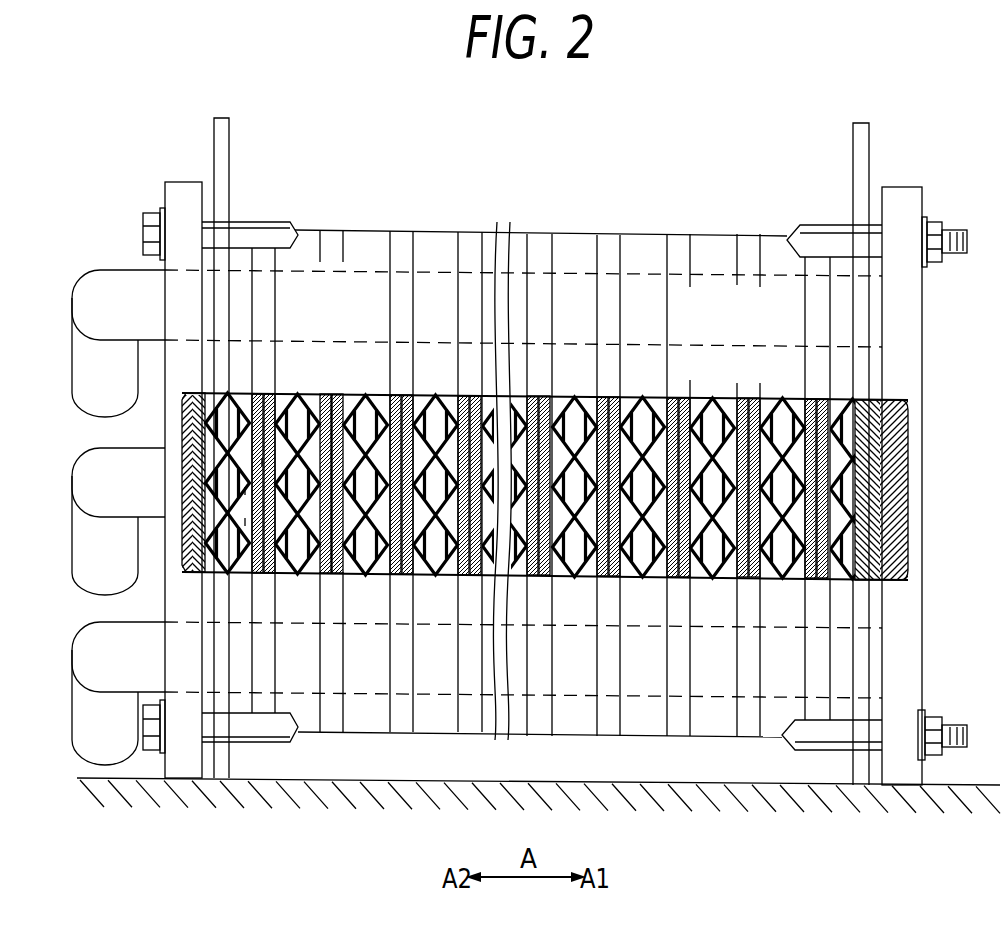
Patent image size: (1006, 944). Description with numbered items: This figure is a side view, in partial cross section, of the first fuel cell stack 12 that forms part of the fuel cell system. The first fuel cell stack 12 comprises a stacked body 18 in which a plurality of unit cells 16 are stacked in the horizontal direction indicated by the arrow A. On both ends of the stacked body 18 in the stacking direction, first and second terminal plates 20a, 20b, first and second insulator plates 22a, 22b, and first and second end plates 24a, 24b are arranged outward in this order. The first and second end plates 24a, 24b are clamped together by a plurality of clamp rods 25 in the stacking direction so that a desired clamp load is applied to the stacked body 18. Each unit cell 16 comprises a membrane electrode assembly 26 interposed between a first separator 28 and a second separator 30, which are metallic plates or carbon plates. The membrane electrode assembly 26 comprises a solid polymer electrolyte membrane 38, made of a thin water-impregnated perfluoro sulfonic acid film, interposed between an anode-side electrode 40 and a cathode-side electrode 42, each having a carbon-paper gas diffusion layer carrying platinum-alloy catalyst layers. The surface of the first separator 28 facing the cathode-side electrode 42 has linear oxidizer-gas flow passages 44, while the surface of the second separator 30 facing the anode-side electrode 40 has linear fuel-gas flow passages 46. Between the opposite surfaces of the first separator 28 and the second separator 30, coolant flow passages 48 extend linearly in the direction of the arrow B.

The first fuel cell stack 12 is at (390, 155).
The unit cell 16 is at (797, 320).
The stacked body 18 is at (716, 215).
The first terminal plate 20a is at (195, 413).
The second terminal plate 20b is at (862, 465).
The first insulator plate 22a is at (242, 442).
The second insulator plate 22b is at (875, 420).
The first end plate 24a is at (183, 193).
The second end plate 24b is at (903, 200).
The clamp rod 25 is at (960, 725).
The membrane electrode assembly 26 is at (380, 309).
The first separator 28 is at (772, 393).
The second separator 30 is at (719, 393).
The solid polymer electrolyte membrane 38 is at (333, 393).
The anode-side electrode 40 is at (320, 393).
The cathode-side electrode 42 is at (345, 393).
The oxidizer-gas flow passage 44 is at (245, 522).
The fuel-gas flow passage 46 is at (262, 462).
The coolant flow passage 48 is at (245, 491).